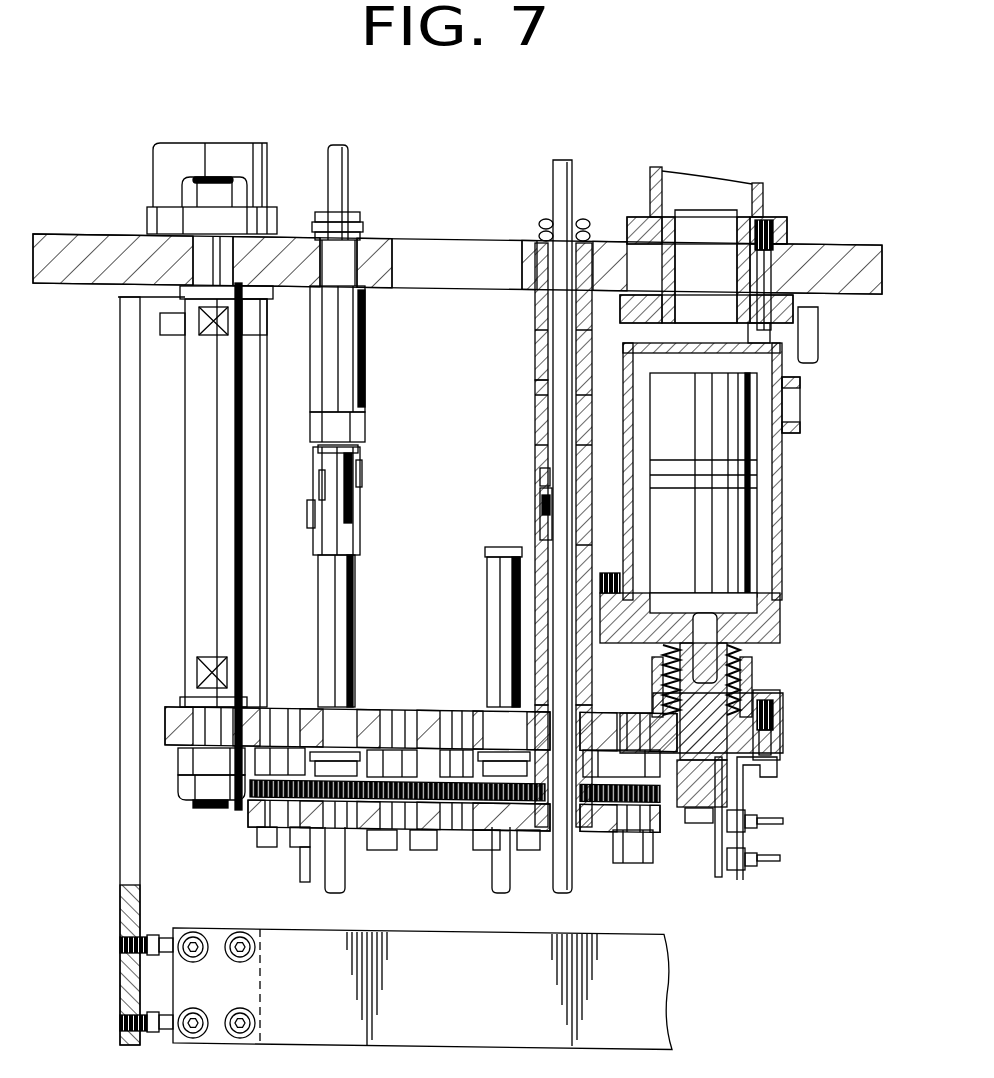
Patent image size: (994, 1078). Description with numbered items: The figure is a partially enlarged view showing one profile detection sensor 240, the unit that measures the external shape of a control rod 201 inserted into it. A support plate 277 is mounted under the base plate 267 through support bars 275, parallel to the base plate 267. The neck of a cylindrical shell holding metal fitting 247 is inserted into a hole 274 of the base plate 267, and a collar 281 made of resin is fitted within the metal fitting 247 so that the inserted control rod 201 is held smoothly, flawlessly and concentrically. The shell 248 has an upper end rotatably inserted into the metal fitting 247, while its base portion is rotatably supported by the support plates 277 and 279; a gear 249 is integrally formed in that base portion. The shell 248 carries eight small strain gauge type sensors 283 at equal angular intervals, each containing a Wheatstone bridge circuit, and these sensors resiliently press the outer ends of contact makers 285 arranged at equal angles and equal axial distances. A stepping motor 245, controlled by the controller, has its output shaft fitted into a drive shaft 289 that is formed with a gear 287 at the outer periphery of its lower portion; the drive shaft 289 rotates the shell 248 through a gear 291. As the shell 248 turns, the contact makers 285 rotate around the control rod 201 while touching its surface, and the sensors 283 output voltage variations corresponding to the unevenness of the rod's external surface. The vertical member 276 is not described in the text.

The control rod 201 is at (348, 166).
The hole 274 is at (355, 262).
The base plate 267 is at (845, 258).
The collar 281 is at (553, 345).
The cylindrical shell holding metal fitting 247 is at (365, 393).
The contact maker 285 is at (545, 478).
The strain gauge type sensor 283 is at (360, 520).
The profile detection sensor 240 is at (465, 597).
The shell 248 is at (355, 630).
The support bar 275 is at (190, 558).
The support plate 276 is at (127, 675).
The stepping motor 245 is at (745, 545).
The drive shaft 289 is at (712, 693).
The gear 287 is at (683, 798).
The support plate 277 is at (167, 752).
The gear 249 is at (320, 815).
The support plate 279 is at (360, 832).
The gear 291 is at (660, 790).